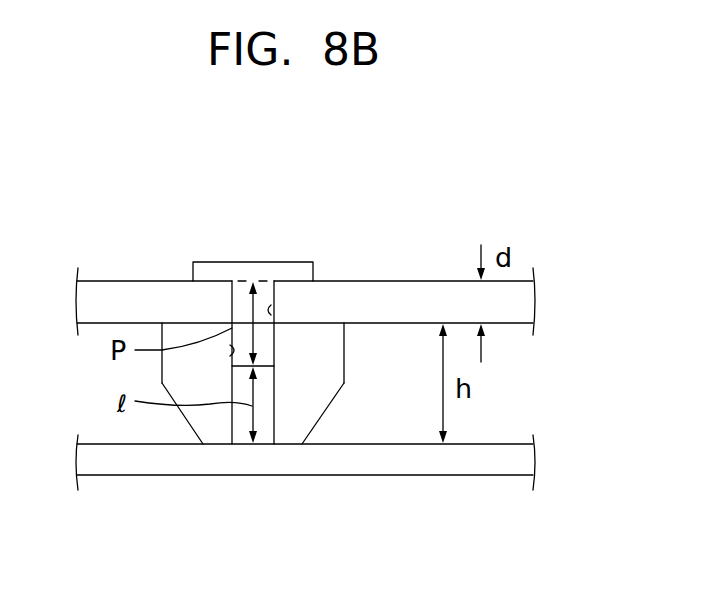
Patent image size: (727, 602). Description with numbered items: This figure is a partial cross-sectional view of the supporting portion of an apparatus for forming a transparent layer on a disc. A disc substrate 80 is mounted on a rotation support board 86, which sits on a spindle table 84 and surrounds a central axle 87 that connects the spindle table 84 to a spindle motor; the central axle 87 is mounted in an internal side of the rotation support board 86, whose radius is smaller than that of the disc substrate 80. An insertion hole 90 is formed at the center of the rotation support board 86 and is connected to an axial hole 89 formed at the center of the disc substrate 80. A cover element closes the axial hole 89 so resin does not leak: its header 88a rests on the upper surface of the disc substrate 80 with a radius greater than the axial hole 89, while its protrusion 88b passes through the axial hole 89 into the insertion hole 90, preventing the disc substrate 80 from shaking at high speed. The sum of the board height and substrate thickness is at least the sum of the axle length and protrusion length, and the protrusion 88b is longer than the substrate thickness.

The disc substrate 80 is at (115, 285).
The spindle table 84 is at (442, 470).
The rotation support board 86 is at (330, 360).
The central axle 87 is at (262, 407).
The header 88a is at (212, 275).
The protrusion 88b is at (267, 288).
The axial hole 89 is at (272, 315).
The insertion hole 90 is at (230, 356).